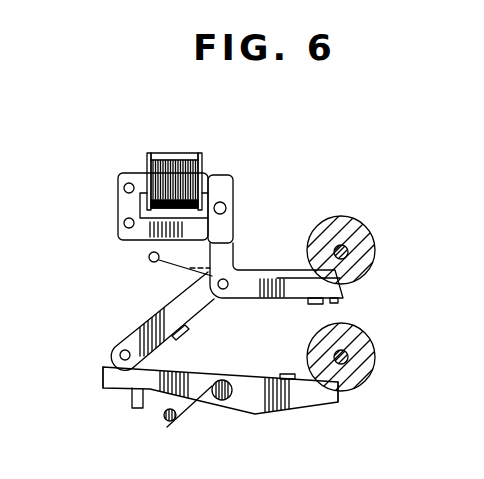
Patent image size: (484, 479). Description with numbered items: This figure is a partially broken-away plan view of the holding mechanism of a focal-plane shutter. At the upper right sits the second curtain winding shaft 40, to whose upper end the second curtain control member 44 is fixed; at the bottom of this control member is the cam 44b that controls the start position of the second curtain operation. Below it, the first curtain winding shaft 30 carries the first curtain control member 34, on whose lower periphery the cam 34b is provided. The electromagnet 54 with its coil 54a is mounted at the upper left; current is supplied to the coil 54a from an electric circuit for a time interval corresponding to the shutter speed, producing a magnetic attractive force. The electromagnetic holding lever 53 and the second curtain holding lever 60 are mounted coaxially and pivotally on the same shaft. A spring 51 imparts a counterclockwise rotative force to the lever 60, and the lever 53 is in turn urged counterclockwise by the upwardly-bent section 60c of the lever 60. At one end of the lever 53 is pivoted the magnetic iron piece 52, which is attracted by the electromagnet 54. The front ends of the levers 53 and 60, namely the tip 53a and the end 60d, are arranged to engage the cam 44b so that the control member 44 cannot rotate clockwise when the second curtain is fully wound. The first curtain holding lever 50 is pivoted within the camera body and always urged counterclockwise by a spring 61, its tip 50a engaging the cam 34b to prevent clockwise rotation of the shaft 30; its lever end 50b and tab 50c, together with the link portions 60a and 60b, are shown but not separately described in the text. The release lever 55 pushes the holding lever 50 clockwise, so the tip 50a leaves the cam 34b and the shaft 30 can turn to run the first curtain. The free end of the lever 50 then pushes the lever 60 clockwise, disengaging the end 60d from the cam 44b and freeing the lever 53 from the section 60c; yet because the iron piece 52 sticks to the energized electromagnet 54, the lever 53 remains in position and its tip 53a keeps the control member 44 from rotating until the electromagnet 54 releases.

The first curtain winding shaft 30 is at (336, 373).
The first curtain control member 34 is at (365, 345).
The cam 34b is at (347, 392).
The second curtain winding shaft 40 is at (336, 263).
The second curtain control member 44 is at (335, 225).
The cam 44b is at (343, 278).
The first curtain holding lever 50 is at (214, 397).
The tip of the first curtain holding lever 50a is at (328, 398).
The lever end 50b is at (102, 388).
The lever tab 50c is at (288, 374).
The spring 51 is at (168, 274).
The magnetic iron piece 52 is at (223, 175).
The electromagnetic holding lever 53 is at (231, 256).
The tip of the electromagnetic holding lever 53a is at (317, 292).
The electromagnet 54 is at (130, 173).
The coil 54a is at (175, 153).
The release lever 55 is at (130, 405).
The second curtain holding lever 60 is at (156, 321).
The link pivot 60a is at (116, 352).
The link tab 60b is at (188, 331).
The upwardly-bent section of the second curtain holding lever 60c is at (312, 304).
The end of the second curtain holding lever 60d is at (333, 305).
The spring 61 is at (203, 403).